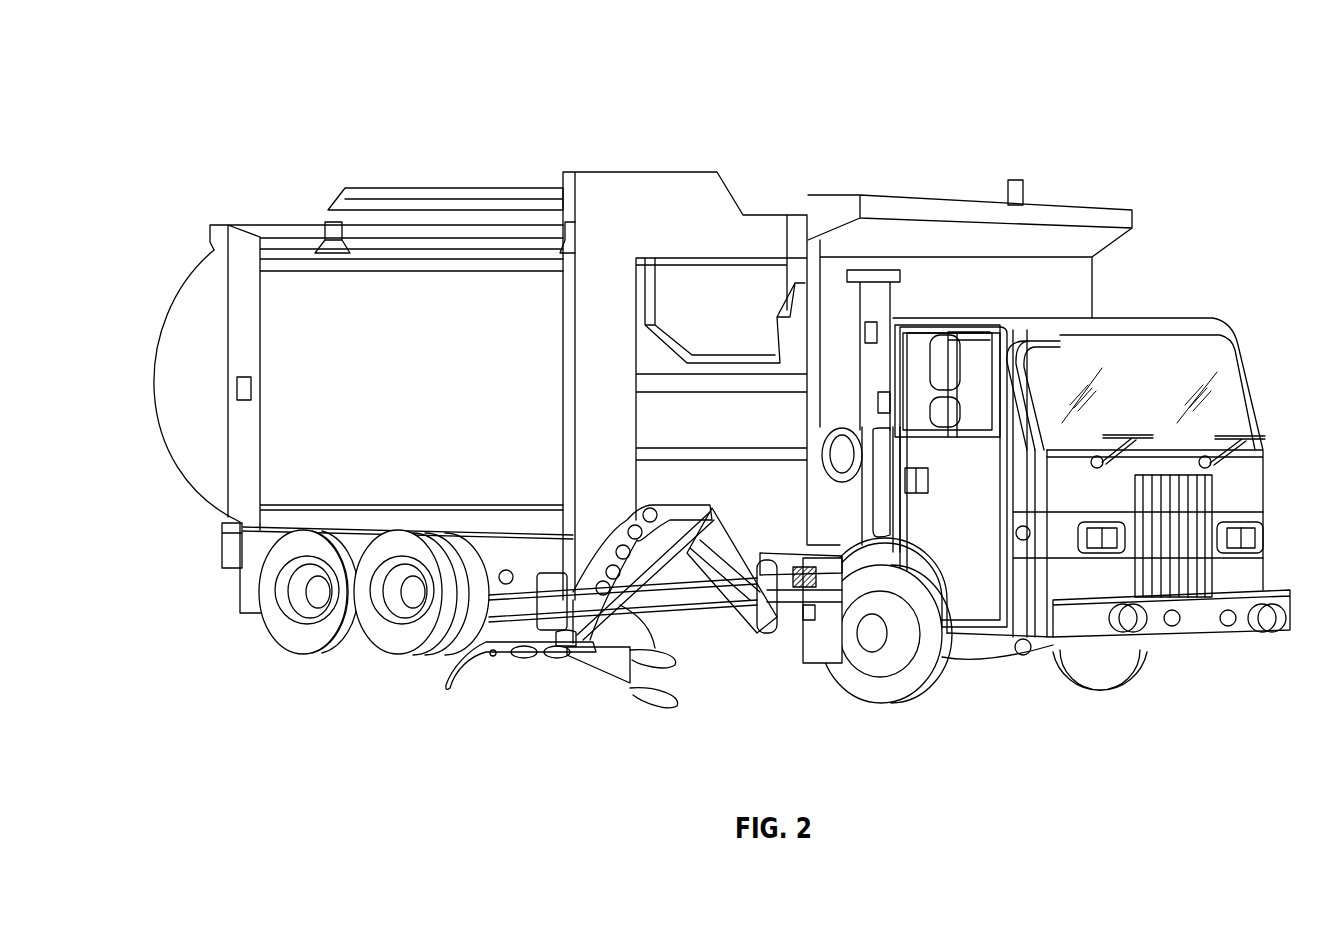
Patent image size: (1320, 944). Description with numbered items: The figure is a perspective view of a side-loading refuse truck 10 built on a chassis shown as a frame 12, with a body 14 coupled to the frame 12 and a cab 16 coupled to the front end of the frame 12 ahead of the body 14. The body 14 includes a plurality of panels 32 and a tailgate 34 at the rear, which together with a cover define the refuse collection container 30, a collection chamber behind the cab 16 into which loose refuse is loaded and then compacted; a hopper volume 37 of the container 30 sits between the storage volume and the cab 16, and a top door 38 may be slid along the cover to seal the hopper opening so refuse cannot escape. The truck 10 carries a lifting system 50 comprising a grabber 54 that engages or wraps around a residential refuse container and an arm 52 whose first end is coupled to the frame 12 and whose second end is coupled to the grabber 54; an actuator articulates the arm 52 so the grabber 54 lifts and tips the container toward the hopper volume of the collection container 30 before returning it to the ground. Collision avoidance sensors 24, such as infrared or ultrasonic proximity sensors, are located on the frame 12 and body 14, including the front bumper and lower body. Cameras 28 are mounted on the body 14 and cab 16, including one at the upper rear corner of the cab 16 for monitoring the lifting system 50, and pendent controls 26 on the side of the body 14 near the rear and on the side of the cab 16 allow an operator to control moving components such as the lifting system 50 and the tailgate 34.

The refuse truck 10 is at (700, 426).
The frame 12 is at (793, 605).
The body 14 is at (313, 267).
The cab 16 is at (1142, 318).
The collision avoidance sensors 24 is at (500, 582).
The pendent control 26 is at (252, 390).
The camera 28 is at (1015, 180).
The refuse collection container 30 is at (637, 222).
The panels 32 is at (430, 295).
The tailgate 34 is at (180, 410).
The hopper opening 37 is at (715, 320).
The top door 38 is at (430, 200).
The lifting system 50 is at (548, 692).
The arm 52 is at (667, 505).
The grabber 54 is at (622, 670).